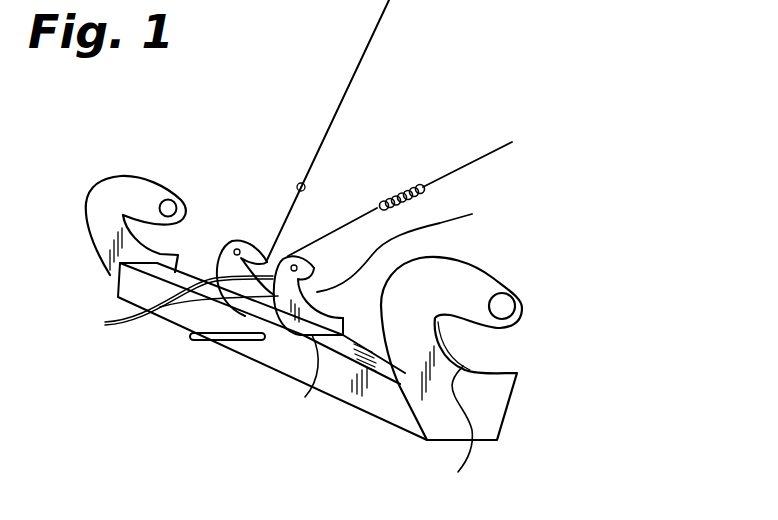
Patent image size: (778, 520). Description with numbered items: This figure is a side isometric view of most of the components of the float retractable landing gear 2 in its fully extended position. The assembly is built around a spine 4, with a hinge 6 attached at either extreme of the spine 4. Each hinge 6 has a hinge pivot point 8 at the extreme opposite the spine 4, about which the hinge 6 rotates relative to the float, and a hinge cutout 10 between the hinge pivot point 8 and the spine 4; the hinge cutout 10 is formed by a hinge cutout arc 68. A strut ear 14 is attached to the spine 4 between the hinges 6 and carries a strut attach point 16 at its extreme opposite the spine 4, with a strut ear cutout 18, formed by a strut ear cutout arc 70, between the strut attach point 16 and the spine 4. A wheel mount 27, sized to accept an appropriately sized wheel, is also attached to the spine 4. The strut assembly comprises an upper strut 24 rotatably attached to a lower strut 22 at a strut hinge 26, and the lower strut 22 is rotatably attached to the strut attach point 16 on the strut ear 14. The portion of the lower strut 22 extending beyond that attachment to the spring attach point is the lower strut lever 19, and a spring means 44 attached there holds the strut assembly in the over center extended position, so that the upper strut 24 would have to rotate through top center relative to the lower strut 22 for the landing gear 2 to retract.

The float retractable landing gear 2 is at (640, 39).
The spine 4 is at (366, 394).
The hinge 6 is at (111, 193).
The hinge pivot point 8 is at (505, 305).
The hinge cutout 10 is at (483, 347).
The strut ear 14 is at (178, 306).
The strut attach point 16 is at (292, 258).
The strut ear cutout 18 is at (411, 247).
The lower strut lever 19 is at (271, 250).
The lower strut 22 is at (268, 257).
The upper strut 24 is at (329, 124).
The strut hinge 26 is at (298, 184).
The wheel mount 27 is at (233, 343).
The spring means 44 is at (468, 165).
The hinge cutout arc 68 is at (457, 431).
The strut ear cutout arc 70 is at (304, 377).